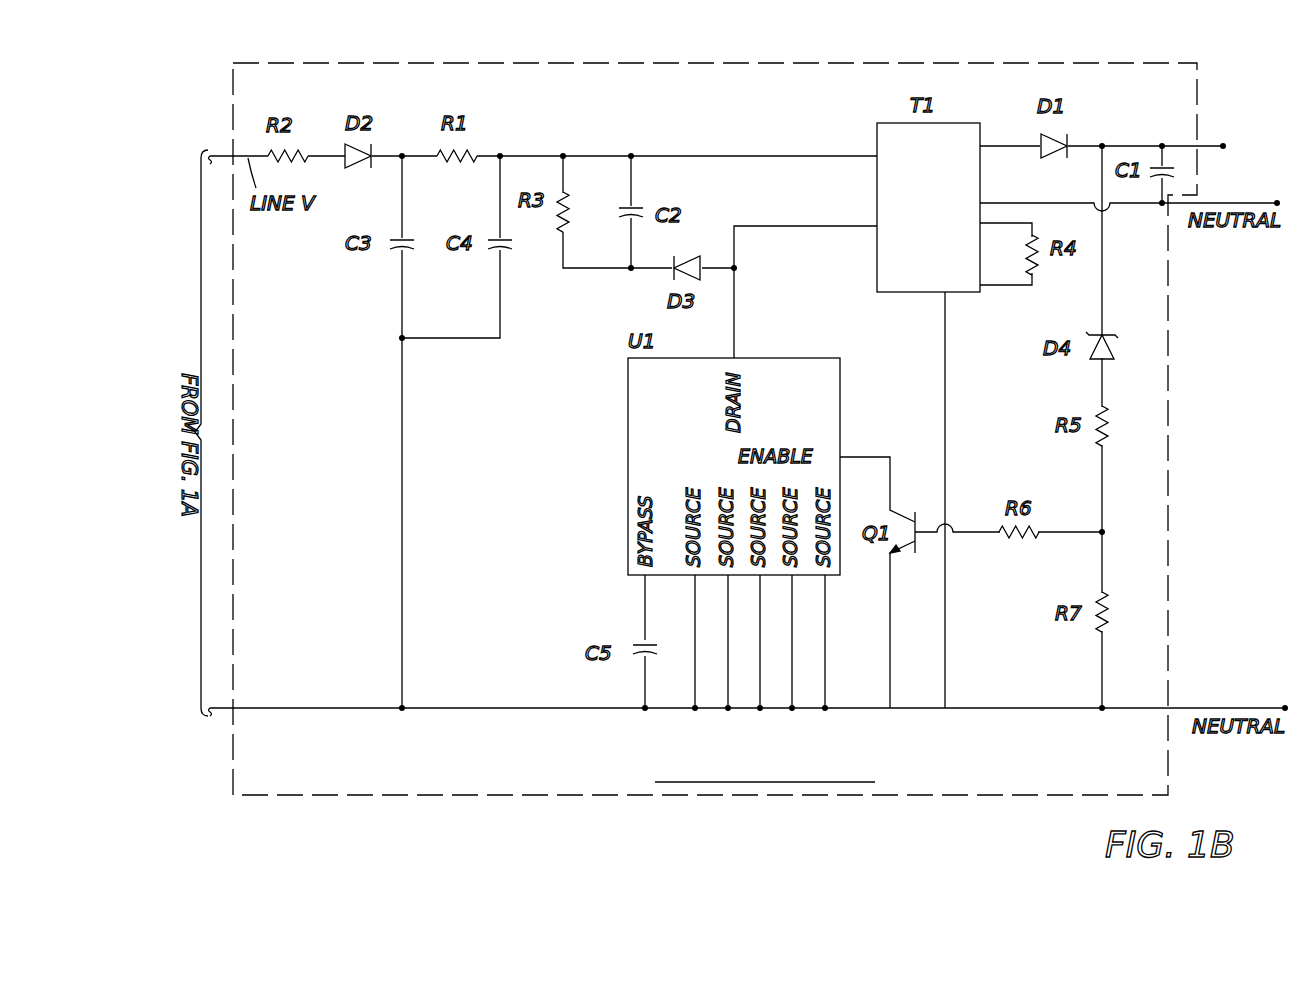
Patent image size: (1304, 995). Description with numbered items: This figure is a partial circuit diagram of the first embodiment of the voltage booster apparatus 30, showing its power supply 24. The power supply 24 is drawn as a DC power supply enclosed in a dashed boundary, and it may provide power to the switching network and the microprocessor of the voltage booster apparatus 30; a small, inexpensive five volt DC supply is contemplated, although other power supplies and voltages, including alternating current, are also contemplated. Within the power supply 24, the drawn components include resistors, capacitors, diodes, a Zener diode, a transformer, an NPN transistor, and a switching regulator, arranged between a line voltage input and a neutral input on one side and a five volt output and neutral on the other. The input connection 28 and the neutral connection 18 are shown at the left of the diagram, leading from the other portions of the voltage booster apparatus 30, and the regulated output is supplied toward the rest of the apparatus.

The neutral line input 18 is at (315, 706).
The power supply 24 is at (628, 795).
The line voltage input 28 is at (227, 153).
The voltage booster apparatus 30 is at (1207, 89).